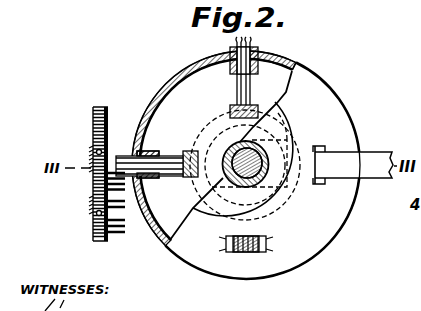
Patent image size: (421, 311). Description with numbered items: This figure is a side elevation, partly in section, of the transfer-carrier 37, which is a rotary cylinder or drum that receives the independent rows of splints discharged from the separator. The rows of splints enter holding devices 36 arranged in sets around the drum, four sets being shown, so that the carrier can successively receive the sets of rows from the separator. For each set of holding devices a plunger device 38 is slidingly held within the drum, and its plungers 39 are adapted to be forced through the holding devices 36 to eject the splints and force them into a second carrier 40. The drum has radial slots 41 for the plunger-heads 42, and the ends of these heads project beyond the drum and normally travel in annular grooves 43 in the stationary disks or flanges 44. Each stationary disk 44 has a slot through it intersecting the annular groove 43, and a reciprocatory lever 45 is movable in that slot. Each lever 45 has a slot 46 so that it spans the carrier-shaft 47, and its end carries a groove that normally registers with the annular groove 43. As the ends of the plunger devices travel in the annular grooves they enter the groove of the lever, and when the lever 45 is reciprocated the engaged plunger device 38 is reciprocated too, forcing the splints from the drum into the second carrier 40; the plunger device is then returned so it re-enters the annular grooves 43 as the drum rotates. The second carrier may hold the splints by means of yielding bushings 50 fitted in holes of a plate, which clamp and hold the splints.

The holding devices 36 is at (251, 53).
The transfer-carrier 37 is at (246, 165).
The plunger device 38 is at (172, 132).
The plungers 39 is at (252, 99).
The second carrier 40 is at (84, 174).
The radial slots 41 is at (258, 252).
The plunger-heads 42 is at (201, 154).
The annular grooves 43 is at (300, 125).
The stationary disks or flanges 44 is at (287, 217).
The reciprocatory lever 45 is at (371, 150).
The slot 46 is at (303, 190).
The carrier-shaft 47 is at (247, 188).
The bushings 50 is at (99, 108).